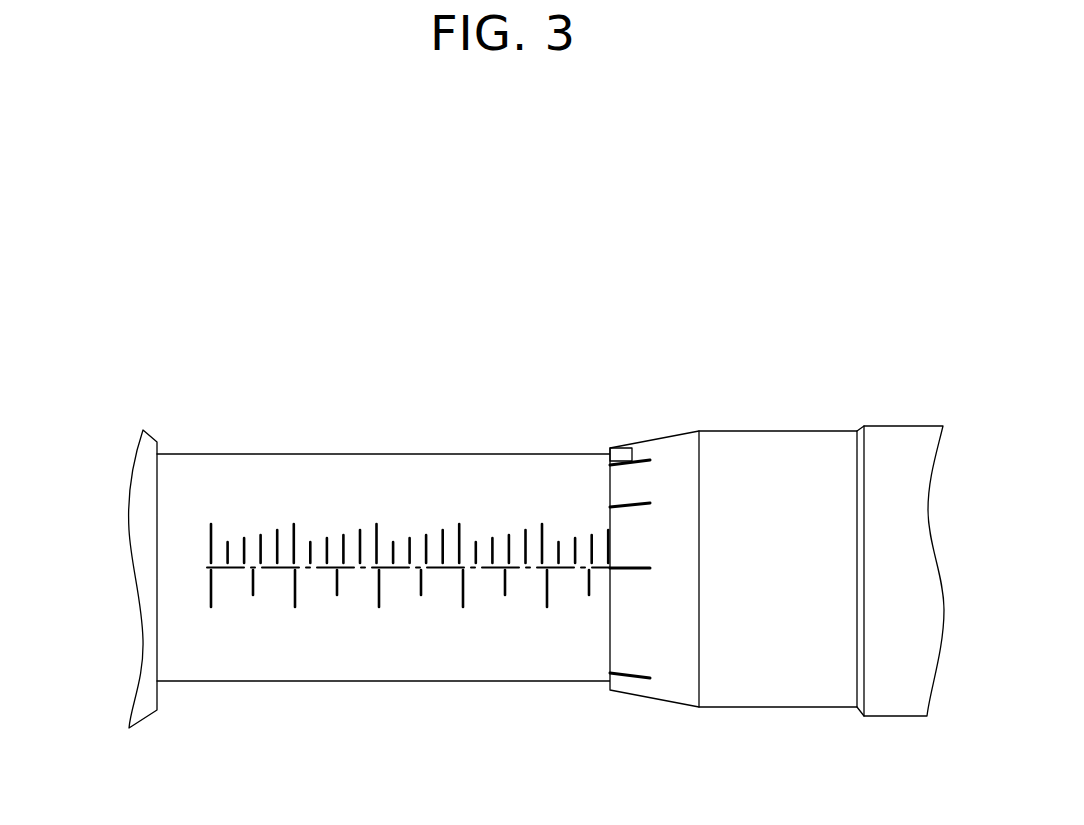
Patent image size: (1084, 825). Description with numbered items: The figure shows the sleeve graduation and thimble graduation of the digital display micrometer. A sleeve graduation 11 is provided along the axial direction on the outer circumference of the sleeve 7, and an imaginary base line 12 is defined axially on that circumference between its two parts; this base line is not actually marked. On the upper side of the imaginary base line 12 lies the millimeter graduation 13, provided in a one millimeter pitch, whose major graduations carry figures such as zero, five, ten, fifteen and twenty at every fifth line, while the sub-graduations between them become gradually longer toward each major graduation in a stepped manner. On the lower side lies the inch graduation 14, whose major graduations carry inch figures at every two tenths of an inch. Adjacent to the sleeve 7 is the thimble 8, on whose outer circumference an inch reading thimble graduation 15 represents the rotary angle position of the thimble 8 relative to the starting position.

The sleeve 7 is at (487, 675).
The thimble 8 is at (798, 700).
The sleeve graduation 11 is at (330, 595).
The imaginary base line 12 is at (237, 569).
The millimeter graduation 13 is at (203, 543).
The inch graduation 14 is at (203, 585).
The inch reading thimble graduation 15 is at (632, 448).